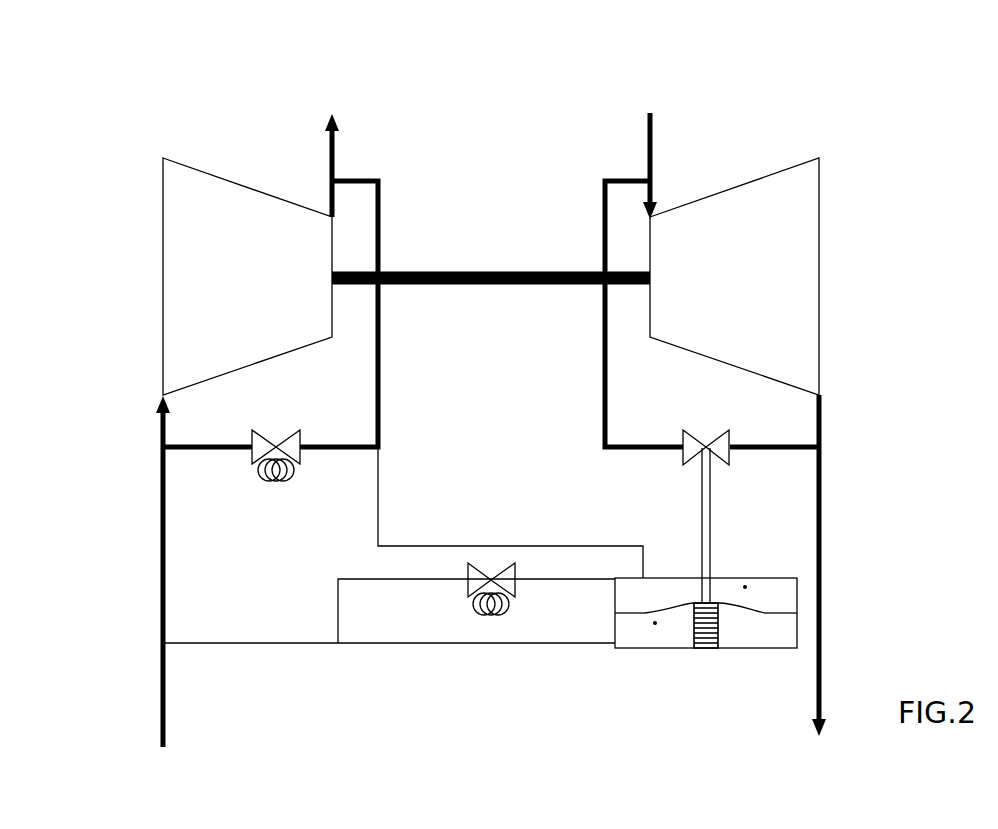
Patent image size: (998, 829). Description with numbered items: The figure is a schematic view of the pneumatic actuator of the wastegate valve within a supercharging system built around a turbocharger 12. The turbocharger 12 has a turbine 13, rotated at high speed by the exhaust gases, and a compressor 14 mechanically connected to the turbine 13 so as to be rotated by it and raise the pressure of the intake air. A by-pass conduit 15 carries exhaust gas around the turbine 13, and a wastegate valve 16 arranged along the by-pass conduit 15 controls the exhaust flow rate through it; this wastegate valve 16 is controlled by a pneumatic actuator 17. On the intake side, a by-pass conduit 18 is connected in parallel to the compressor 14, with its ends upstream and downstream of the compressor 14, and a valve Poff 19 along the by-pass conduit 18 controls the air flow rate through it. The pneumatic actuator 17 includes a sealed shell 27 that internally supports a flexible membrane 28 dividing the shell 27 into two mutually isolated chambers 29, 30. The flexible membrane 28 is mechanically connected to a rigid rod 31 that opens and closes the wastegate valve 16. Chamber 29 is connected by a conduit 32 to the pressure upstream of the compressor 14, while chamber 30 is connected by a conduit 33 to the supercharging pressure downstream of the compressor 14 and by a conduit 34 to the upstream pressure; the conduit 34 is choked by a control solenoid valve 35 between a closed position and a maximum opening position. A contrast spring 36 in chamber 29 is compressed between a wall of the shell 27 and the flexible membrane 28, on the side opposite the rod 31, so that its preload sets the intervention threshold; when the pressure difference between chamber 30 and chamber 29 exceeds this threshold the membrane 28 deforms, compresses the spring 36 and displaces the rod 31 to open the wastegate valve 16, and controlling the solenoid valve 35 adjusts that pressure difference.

The turbocharger 12 is at (504, 96).
The turbine 13 is at (731, 202).
The compressor 14 is at (261, 200).
The by-pass conduit 15 is at (604, 386).
The wastegate valve 16 is at (722, 443).
The pneumatic actuator 17 is at (572, 529).
The by-pass conduit 18 is at (379, 393).
The valve Poff 19 is at (290, 442).
The sealed shell 27 is at (757, 650).
The flexible membrane 28 is at (753, 610).
The chamber 29 is at (653, 626).
The chamber 30 is at (744, 584).
The rigid rod 31 is at (700, 487).
The conduit 32 is at (460, 645).
The conduit 33 is at (379, 486).
The conduit 34 is at (341, 578).
The control solenoid valve 35 is at (507, 588).
The contrast spring 36 is at (706, 650).